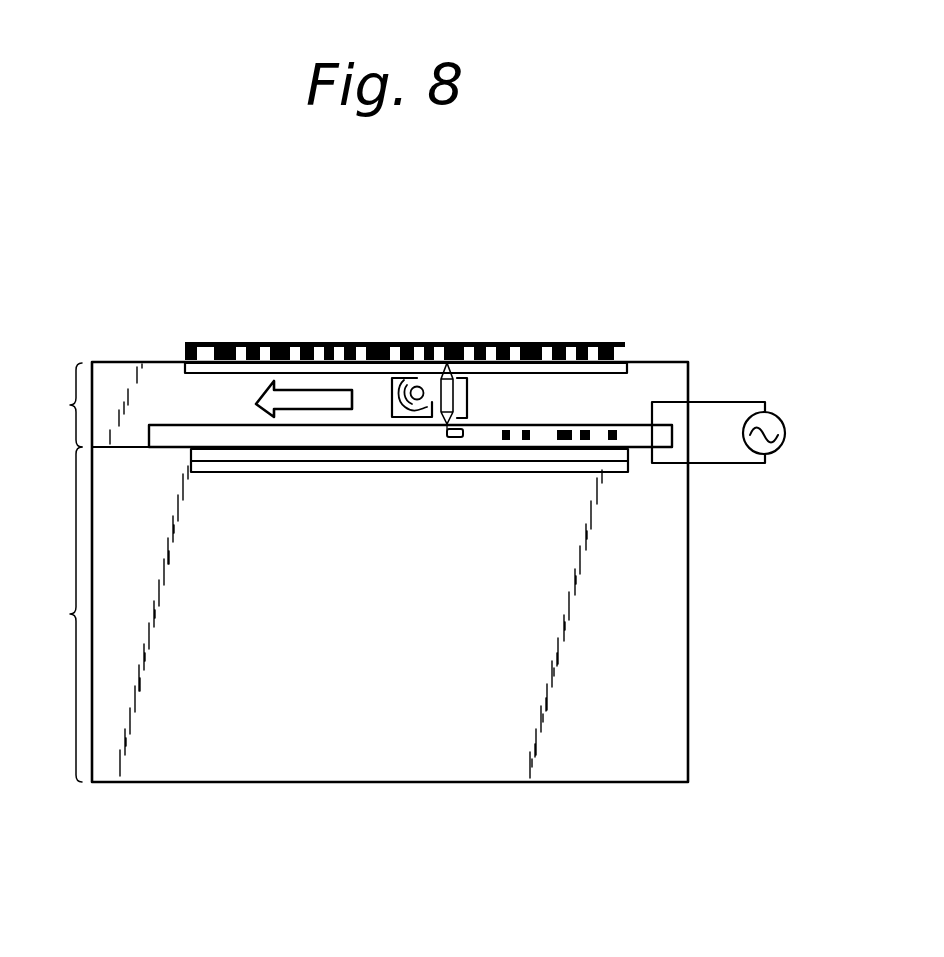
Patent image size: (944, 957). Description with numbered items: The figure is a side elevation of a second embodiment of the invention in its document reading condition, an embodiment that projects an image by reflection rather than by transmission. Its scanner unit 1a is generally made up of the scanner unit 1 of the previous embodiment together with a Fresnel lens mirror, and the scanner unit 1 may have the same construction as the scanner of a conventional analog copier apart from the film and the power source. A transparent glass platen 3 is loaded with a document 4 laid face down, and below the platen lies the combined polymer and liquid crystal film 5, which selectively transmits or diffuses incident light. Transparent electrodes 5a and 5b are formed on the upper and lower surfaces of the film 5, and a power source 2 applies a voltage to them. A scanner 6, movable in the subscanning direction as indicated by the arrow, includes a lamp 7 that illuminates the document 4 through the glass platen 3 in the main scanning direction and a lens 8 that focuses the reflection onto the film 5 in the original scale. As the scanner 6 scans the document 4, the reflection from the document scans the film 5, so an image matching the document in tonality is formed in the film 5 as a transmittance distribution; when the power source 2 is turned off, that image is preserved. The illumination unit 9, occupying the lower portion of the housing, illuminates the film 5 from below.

The scanner unit 1 is at (93, 405).
The scanner unit 1a is at (697, 504).
The power source 2 is at (777, 412).
The transparent glass platen 3 is at (352, 343).
The document 4 is at (431, 342).
The combined polymer and liquid crystal film 5 is at (500, 424).
The transparent electrode 5a is at (615, 424).
The transparent electrode 5b is at (640, 447).
The scanner 6 is at (423, 421).
The lamp 7 is at (403, 420).
The lens 8 is at (458, 398).
The illumination unit 9 is at (321, 614).